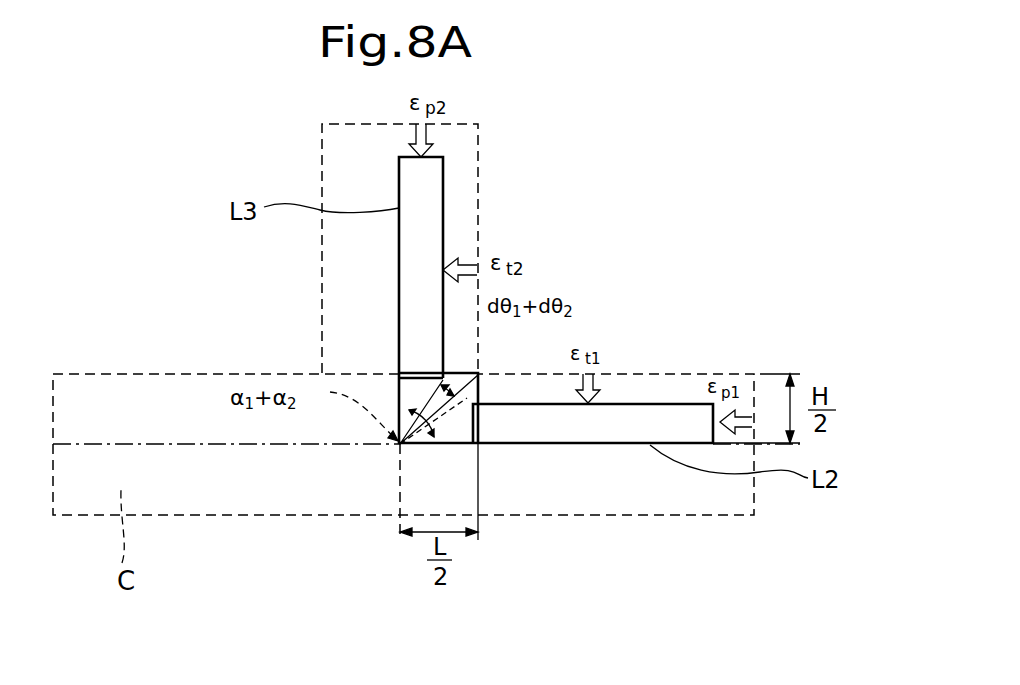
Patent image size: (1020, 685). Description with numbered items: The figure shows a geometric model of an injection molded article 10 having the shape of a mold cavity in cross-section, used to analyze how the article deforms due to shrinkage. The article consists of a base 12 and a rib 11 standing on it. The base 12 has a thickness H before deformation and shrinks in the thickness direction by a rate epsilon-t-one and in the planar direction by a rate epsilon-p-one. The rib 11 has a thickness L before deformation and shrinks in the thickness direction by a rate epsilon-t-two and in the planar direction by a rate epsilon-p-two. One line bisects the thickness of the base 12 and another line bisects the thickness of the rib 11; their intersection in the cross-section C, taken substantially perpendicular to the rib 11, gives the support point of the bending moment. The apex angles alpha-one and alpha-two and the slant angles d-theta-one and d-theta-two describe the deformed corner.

The injection molded article 10 is at (650, 207).
The rib 11 is at (444, 186).
The base 12 is at (670, 403).